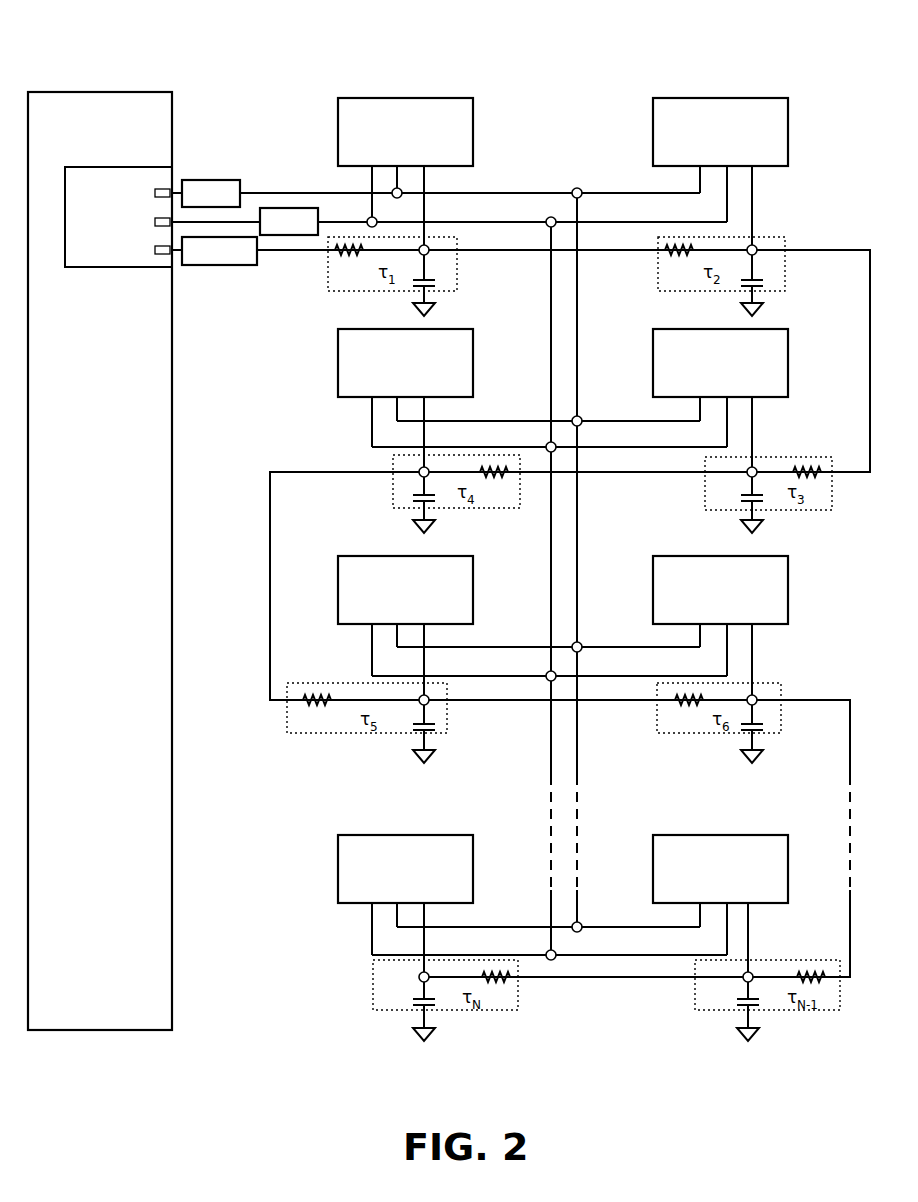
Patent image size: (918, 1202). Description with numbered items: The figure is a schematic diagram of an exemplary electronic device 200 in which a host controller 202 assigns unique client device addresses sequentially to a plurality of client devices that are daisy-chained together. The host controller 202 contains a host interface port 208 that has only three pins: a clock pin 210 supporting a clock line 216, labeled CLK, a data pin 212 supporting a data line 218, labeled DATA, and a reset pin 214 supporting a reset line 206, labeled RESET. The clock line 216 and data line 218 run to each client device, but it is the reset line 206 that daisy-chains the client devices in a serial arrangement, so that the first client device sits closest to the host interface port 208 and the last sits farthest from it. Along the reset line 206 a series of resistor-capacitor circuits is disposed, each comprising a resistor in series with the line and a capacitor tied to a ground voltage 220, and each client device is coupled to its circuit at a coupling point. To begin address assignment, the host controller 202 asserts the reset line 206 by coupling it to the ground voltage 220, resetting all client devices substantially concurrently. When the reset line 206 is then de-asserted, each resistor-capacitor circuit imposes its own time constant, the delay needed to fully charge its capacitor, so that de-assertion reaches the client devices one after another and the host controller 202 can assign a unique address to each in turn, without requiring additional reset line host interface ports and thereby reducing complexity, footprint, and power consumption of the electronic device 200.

The electronic device 200 is at (332, 46).
The host controller 202 is at (132, 92).
The reset line 206 is at (300, 252).
The host interface port 208 is at (100, 268).
The clock pin 210 is at (155, 193).
The data pin 212 is at (155, 222).
The reset pin 214 is at (155, 250).
The clock line 216 is at (260, 192).
The data line 218 is at (505, 221).
The ground voltage 220 is at (436, 312).